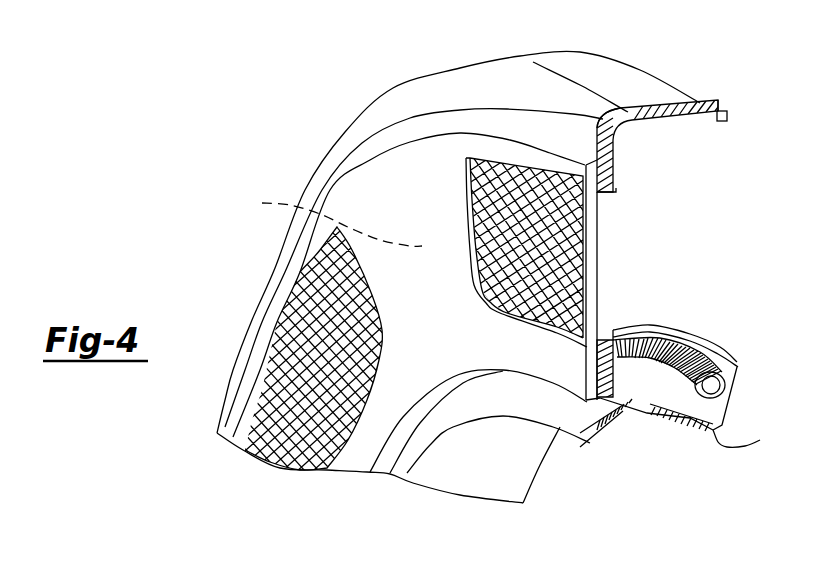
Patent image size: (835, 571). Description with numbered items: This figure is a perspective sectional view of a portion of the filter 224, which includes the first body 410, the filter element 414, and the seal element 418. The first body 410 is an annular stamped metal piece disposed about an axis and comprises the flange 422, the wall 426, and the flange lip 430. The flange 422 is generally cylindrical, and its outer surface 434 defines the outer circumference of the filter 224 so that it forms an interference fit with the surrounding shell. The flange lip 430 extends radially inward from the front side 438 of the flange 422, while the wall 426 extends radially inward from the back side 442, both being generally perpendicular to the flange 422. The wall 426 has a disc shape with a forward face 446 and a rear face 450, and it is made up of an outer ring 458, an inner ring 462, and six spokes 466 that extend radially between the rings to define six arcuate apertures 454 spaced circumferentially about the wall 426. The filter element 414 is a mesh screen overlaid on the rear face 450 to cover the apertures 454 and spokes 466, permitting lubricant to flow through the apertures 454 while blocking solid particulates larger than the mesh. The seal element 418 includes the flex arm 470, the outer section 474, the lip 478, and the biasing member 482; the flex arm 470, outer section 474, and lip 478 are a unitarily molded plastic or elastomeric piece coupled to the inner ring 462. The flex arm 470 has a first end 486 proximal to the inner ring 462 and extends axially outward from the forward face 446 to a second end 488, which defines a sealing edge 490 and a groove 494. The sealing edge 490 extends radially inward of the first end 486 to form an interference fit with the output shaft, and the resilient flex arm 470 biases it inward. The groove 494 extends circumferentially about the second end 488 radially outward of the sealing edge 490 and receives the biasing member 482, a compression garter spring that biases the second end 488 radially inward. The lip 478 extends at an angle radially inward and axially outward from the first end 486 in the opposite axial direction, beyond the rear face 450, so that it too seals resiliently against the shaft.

The filter 224 is at (305, 175).
The first body 410 is at (409, 93).
The filter element 414 is at (535, 262).
The seal element 418 is at (643, 412).
The flange 422 is at (697, 105).
The wall 426 is at (617, 183).
The flange lip 430 is at (720, 123).
The outer surface 434 is at (597, 62).
The front side 438 is at (727, 114).
The back side 442 is at (597, 130).
The forward face 446 is at (625, 388).
The rear face 450 is at (583, 363).
The aperture 454 is at (608, 200).
The outer ring 458 is at (617, 162).
The inner ring 462 is at (605, 338).
The spoke 466 is at (391, 0).
The flex arm 470 is at (677, 417).
The outer section 474 is at (420, 173).
The lip 478 is at (590, 443).
The biasing member 482 is at (655, 345).
The first end 486 is at (722, 432).
The second end 488 is at (733, 382).
The sealing edge 490 is at (730, 445).
The groove 494 is at (713, 387).